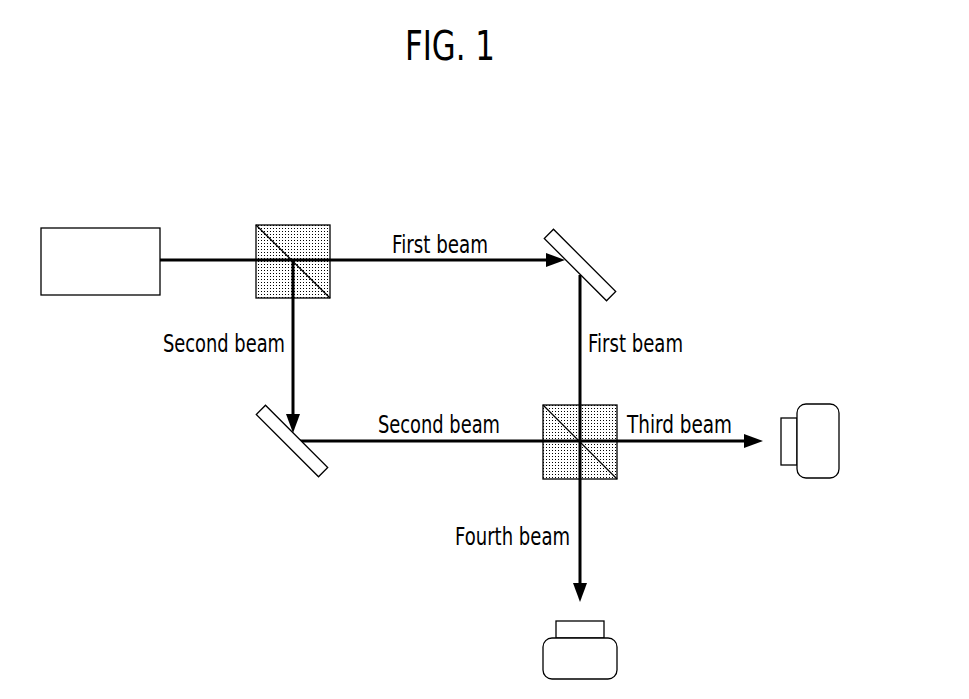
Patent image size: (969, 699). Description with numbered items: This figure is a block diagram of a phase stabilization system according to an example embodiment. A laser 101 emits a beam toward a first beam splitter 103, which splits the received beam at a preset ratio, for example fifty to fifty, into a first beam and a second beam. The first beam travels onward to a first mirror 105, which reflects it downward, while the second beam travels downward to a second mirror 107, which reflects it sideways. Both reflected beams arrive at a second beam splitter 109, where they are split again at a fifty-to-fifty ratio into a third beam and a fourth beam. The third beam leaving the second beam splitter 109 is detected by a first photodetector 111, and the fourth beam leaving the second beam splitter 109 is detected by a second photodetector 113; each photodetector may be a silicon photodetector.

The laser 101 is at (100, 261).
The first beam splitter 103 is at (291, 231).
The first mirror 105 is at (608, 255).
The second mirror 107 is at (244, 449).
The second beam splitter 109 is at (662, 471).
The first photodetector 111 is at (819, 410).
The second photodetector 113 is at (683, 658).